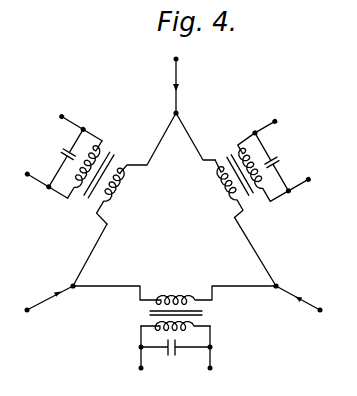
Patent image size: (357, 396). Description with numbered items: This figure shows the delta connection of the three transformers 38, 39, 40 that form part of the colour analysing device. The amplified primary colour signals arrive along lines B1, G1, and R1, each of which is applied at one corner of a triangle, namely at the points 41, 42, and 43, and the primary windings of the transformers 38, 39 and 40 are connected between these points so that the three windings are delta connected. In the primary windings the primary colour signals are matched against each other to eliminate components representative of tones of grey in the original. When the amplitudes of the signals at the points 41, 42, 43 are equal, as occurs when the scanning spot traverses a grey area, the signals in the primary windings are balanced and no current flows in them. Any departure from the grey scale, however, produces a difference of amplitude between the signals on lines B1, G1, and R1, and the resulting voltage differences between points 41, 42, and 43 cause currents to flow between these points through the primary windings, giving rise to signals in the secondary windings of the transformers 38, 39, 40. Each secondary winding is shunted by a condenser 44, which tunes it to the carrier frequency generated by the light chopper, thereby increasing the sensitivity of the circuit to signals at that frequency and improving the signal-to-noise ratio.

The line R1 is at (177, 73).
The line G1 is at (54, 292).
The line B1 is at (309, 302).
The point 41 is at (179, 113).
The point 42 is at (74, 290).
The point 43 is at (273, 293).
The transformer 38 is at (116, 191).
The transformer 39 is at (187, 294).
The transformer 40 is at (216, 185).
The condenser 44 is at (64, 156).